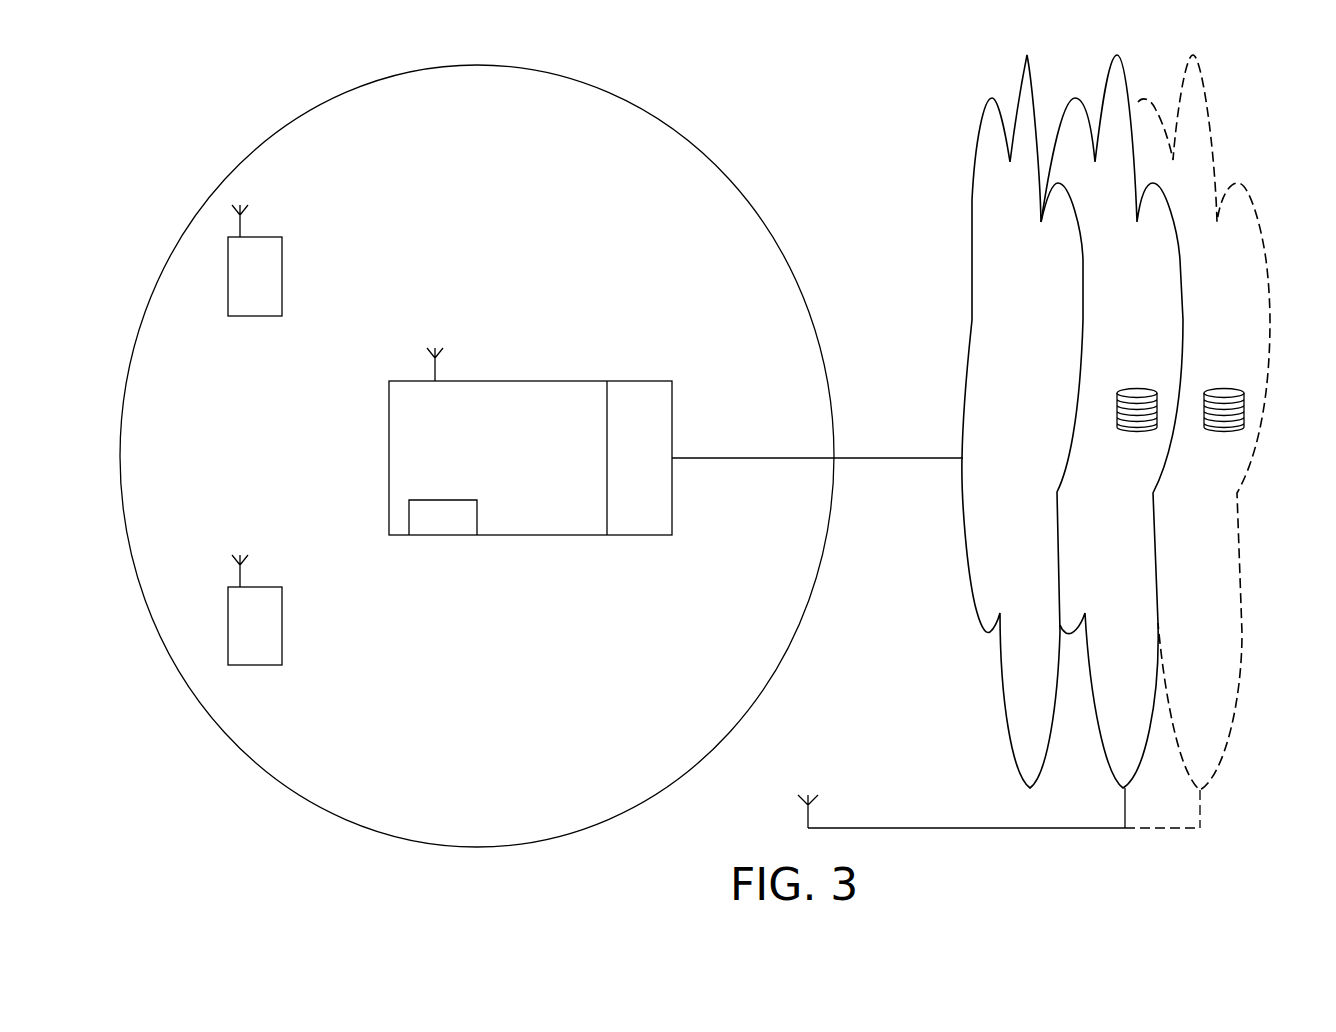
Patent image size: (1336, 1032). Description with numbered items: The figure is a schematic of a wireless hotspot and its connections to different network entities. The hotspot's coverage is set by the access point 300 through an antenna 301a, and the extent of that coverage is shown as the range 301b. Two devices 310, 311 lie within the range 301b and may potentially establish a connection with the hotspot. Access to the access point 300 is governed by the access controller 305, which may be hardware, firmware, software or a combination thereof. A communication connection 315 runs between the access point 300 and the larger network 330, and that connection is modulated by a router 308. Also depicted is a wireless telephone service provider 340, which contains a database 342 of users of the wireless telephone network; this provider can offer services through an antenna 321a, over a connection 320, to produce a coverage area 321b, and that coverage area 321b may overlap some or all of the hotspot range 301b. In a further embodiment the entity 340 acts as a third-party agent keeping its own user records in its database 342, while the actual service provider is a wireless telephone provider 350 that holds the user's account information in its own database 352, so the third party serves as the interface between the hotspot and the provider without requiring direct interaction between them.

The access point 300 is at (553, 504).
The antenna 301a is at (447, 368).
The range 301b is at (500, 114).
The access controller 305 is at (440, 535).
The router 308 is at (631, 535).
The device 310 is at (282, 278).
The device 311 is at (282, 648).
The communication connection 315 is at (870, 458).
The connection 320 is at (978, 828).
The antenna 321a is at (820, 817).
The coverage area 321b is at (894, 714).
The larger network 330 is at (1049, 291).
The wireless telephone service provider 340 is at (1149, 291).
The database 342 is at (1133, 438).
The wireless telephone provider 350 is at (1239, 291).
The database 352 is at (1228, 438).